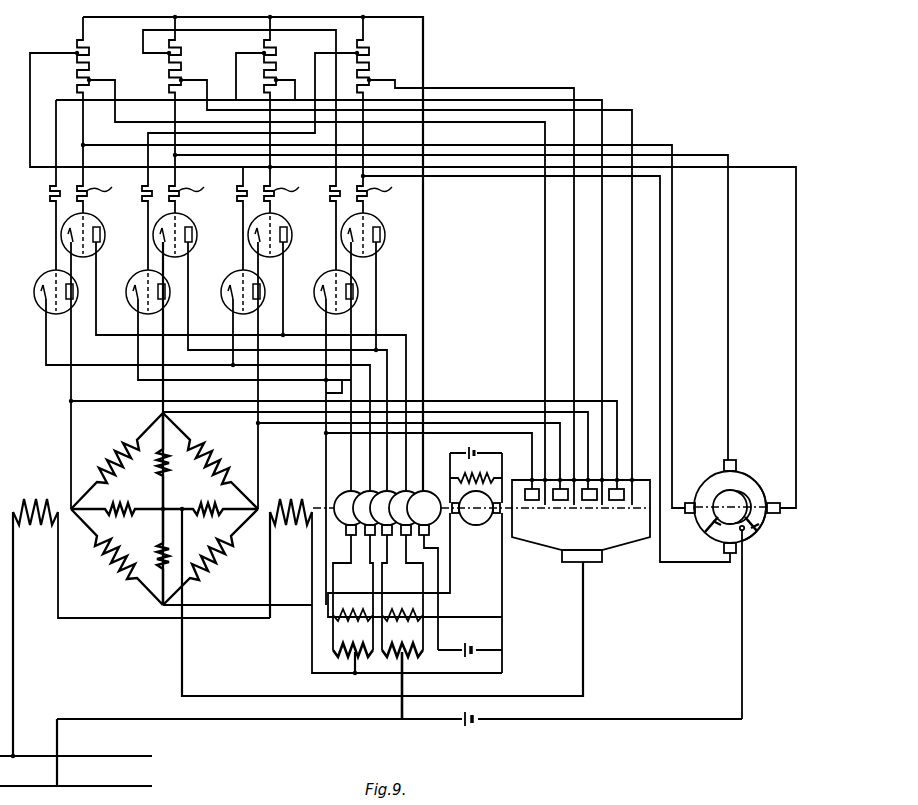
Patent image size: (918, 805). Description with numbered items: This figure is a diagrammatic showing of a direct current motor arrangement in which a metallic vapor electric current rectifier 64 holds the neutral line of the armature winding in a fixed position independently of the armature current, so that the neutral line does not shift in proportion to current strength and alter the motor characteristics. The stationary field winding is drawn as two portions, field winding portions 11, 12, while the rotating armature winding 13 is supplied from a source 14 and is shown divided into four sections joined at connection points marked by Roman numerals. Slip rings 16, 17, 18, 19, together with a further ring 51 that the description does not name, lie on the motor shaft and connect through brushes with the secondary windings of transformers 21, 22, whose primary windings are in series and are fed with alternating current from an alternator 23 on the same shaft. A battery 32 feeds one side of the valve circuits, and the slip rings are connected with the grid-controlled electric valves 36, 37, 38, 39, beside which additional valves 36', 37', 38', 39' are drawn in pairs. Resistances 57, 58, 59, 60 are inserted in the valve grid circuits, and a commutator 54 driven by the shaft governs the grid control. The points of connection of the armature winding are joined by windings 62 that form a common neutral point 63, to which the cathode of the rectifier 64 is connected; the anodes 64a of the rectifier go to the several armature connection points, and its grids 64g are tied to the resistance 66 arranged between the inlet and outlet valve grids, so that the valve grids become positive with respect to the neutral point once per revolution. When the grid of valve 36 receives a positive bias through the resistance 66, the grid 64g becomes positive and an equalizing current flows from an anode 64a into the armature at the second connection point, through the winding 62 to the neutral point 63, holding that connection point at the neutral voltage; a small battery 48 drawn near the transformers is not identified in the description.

The resistance 66 is at (385, 40).
The resistance 60 is at (108, 190).
The resistance 59 is at (200, 190).
The resistance 58 is at (294, 190).
The resistance 57 is at (386, 190).
The electric valve 39 is at (98, 232).
The electric valve 38 is at (190, 232).
The electric valve 37 is at (286, 232).
The electric valve 36 is at (378, 232).
The electron tube 39' is at (78, 260).
The electron tube 38' is at (170, 260).
The electron tube 37' is at (265, 260).
The electron tube 36' is at (358, 260).
The slip ring 16 is at (351, 491).
The slip ring 17 is at (370, 491).
The slip ring 18 is at (387, 491).
The slip ring 19 is at (406, 491).
The relay 51 is at (424, 491).
The alternator 23 is at (448, 488).
The electric current rectifier 64 is at (581, 523).
The anode of rectifier 64a is at (531, 500).
The grid of rectifier 64g is at (560, 500).
The commutator 54 is at (768, 538).
The field winding portion 11 is at (27, 530).
The field winding portion 12 is at (284, 530).
The armature winding 13 is at (322, 548).
The winding 62 is at (204, 494).
The neutral point 63 is at (158, 494).
The transformer 21 is at (330, 638).
The transformer 22 is at (410, 635).
The battery 48 is at (472, 646).
The battery 32 is at (481, 712).
The source 14 is at (156, 758).